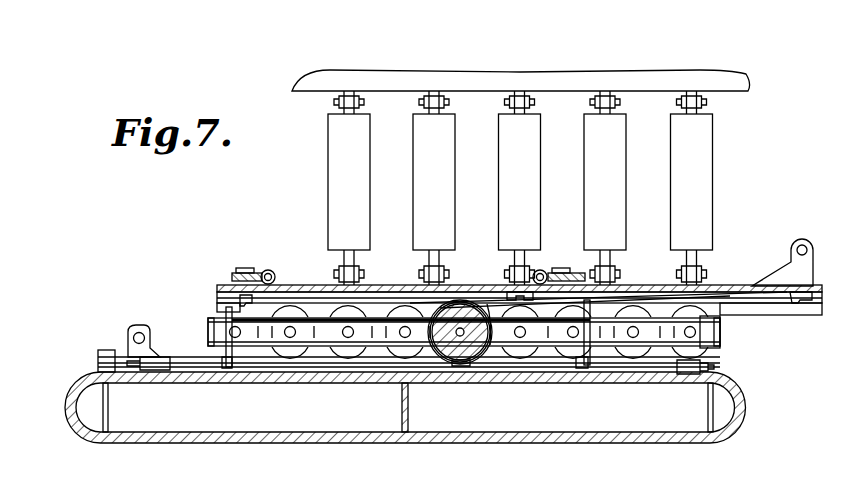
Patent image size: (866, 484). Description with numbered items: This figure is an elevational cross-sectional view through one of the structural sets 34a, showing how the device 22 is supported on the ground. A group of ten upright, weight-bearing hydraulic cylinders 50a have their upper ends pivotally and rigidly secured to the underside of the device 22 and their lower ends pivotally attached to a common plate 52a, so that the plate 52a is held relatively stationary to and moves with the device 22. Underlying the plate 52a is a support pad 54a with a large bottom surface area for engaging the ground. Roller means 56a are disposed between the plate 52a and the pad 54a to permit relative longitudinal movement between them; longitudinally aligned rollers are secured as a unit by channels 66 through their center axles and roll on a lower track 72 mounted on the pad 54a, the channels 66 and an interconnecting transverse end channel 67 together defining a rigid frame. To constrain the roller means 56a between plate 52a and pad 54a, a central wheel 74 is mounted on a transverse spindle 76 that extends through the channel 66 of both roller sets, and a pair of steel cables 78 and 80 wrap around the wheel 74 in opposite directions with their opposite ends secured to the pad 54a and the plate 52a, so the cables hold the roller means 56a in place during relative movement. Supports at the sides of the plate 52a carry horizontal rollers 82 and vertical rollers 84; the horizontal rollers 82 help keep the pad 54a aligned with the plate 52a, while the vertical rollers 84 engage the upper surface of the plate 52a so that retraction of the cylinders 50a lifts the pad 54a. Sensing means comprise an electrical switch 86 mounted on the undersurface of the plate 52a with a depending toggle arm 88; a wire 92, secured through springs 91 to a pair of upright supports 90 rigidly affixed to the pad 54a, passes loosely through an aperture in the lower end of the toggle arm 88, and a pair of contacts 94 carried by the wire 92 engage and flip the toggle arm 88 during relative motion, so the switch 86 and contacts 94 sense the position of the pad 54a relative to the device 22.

The device 22 is at (690, 64).
The hydraulic cylinders 50a is at (712, 135).
The structural set 34a is at (300, 188).
The roller means 56a is at (208, 312).
The horizontal rollers 82 is at (242, 272).
The vertical rollers 84 is at (268, 270).
The electrical switch 86 is at (507, 293).
The channels 66 is at (384, 338).
The springs 91 is at (242, 326).
The wire 92 is at (490, 332).
The contacts 94 is at (292, 316).
The central wheel 74 is at (468, 344).
The transverse spindle 76 is at (456, 350).
The toggle arm 88 is at (500, 340).
The steel cable 78 is at (284, 362).
The lower track 72 is at (168, 350).
The upright supports 90 is at (228, 360).
The steel cable 80 is at (646, 366).
The transverse end channel 67 is at (722, 334).
The plate 52a is at (706, 286).
The support pad 54a is at (68, 412).